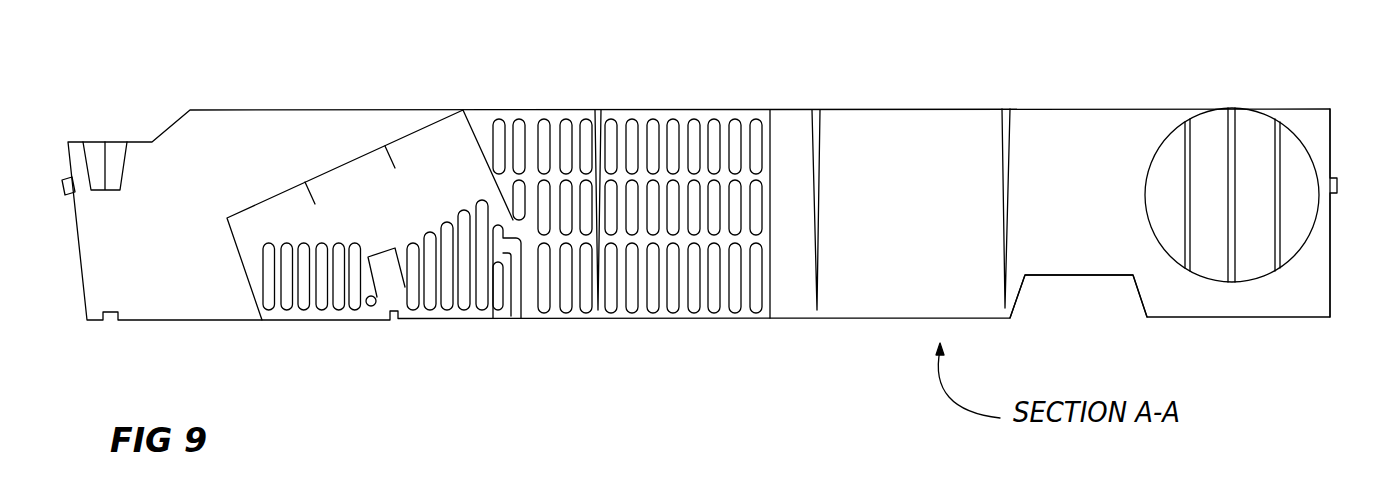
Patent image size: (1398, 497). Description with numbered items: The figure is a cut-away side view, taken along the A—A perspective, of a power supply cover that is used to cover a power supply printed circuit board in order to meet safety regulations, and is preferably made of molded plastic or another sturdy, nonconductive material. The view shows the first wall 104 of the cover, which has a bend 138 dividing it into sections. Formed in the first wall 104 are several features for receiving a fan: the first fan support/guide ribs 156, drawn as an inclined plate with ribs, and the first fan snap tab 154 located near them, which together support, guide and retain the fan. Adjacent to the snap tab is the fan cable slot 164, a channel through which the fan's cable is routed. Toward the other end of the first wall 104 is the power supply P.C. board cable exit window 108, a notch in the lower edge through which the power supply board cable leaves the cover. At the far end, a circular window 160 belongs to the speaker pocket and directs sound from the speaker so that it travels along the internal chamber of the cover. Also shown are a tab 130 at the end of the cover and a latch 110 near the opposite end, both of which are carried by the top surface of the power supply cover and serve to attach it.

The first wall 104 is at (157, 302).
The power supply P.C. board cable exit window 108 is at (1080, 282).
The latch 110 is at (60, 182).
The tab 130 is at (1332, 112).
The bend 138 is at (770, 106).
The first fan snap tab 154 is at (387, 287).
The first fan support/guide ribs 156 is at (337, 160).
The window 160 is at (1262, 278).
The fan cable slot 164 is at (518, 306).